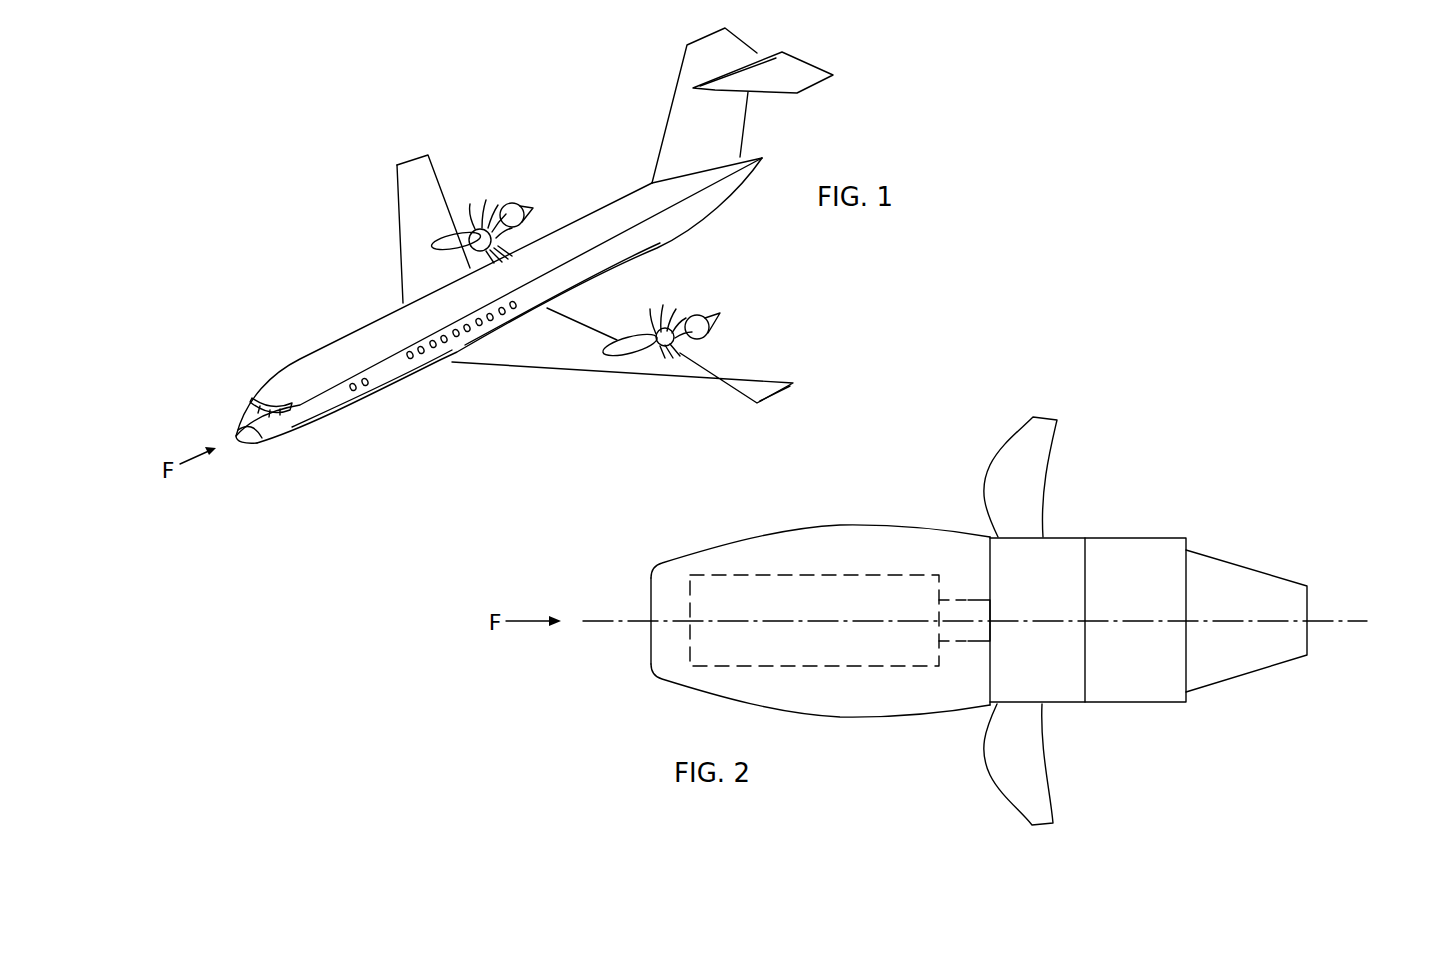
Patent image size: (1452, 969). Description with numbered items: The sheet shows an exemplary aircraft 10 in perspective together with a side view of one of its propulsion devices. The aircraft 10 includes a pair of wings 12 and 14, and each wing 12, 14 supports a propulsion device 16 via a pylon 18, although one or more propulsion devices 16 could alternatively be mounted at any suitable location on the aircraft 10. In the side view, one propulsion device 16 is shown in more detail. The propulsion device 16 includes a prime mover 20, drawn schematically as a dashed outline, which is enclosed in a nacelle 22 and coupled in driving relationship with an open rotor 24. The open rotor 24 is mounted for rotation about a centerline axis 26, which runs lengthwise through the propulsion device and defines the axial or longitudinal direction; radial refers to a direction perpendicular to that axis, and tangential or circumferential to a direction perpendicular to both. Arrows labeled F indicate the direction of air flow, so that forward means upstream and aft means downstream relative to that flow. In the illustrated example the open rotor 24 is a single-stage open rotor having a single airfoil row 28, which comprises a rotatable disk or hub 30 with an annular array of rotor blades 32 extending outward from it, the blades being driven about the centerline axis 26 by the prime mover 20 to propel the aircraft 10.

In FIG. 1, the aircraft 10 is at (459, 111).
In FIG. 1, the wing 12 is at (521, 356).
In FIG. 1, the wing 14 is at (412, 226).
In FIG. 1, the propulsion device 16 is at (502, 186).
In FIG. 2, the propulsion device 16 is at (944, 646).
In FIG. 1, the pylon 18 is at (458, 240).
In FIG. 2, the prime mover 20 is at (730, 672).
In FIG. 2, the nacelle 22 is at (683, 553).
In FIG. 2, the open rotor 24 is at (1132, 646).
In FIG. 2, the centerline axis 26 is at (1347, 617).
In FIG. 2, the airfoil row 28 is at (1019, 646).
In FIG. 2, the hub 30 is at (1063, 553).
In FIG. 2, the rotor blades 32 is at (1012, 446).